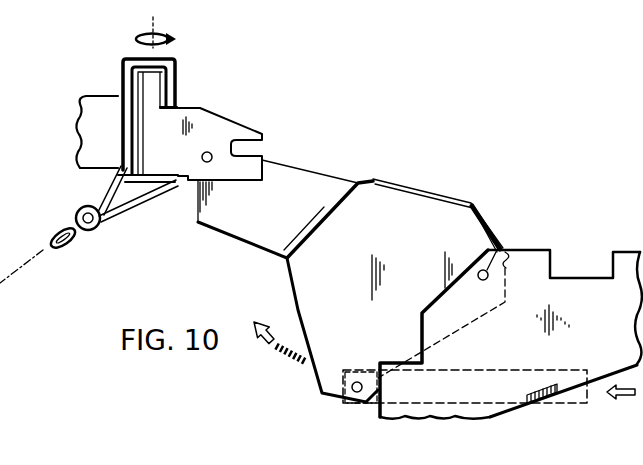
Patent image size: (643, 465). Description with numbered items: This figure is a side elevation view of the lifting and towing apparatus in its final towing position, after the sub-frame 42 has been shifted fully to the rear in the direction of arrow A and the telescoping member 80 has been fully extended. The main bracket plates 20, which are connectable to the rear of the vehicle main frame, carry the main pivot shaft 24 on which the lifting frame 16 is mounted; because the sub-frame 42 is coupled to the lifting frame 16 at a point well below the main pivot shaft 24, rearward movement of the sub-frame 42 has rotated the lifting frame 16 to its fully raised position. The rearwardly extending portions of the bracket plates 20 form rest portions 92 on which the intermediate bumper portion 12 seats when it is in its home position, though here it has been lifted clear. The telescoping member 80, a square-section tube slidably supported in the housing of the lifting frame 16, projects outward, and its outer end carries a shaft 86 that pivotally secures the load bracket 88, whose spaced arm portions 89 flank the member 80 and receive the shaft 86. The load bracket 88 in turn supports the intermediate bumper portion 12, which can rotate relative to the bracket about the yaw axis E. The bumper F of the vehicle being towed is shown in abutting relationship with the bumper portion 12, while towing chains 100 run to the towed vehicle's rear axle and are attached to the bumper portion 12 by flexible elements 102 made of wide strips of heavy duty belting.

The intermediate bumper portion 12 is at (128, 78).
The lifting frame 16 is at (428, 178).
The main bracket plates 20 is at (547, 246).
The main pivot shaft 24 is at (497, 250).
The sub-frame 42 is at (522, 408).
The telescoping member 80 is at (285, 187).
The shaft 86 is at (212, 153).
The load bracket 88 is at (225, 114).
The arm portions 89 is at (188, 118).
The rest portions 92 is at (397, 362).
The towing chains 100 is at (65, 249).
The flexible elements 102 is at (119, 215).
The yaw axis E is at (158, 22).
The bumper of the vehicle being towed F is at (76, 116).
The arrow A is at (621, 402).